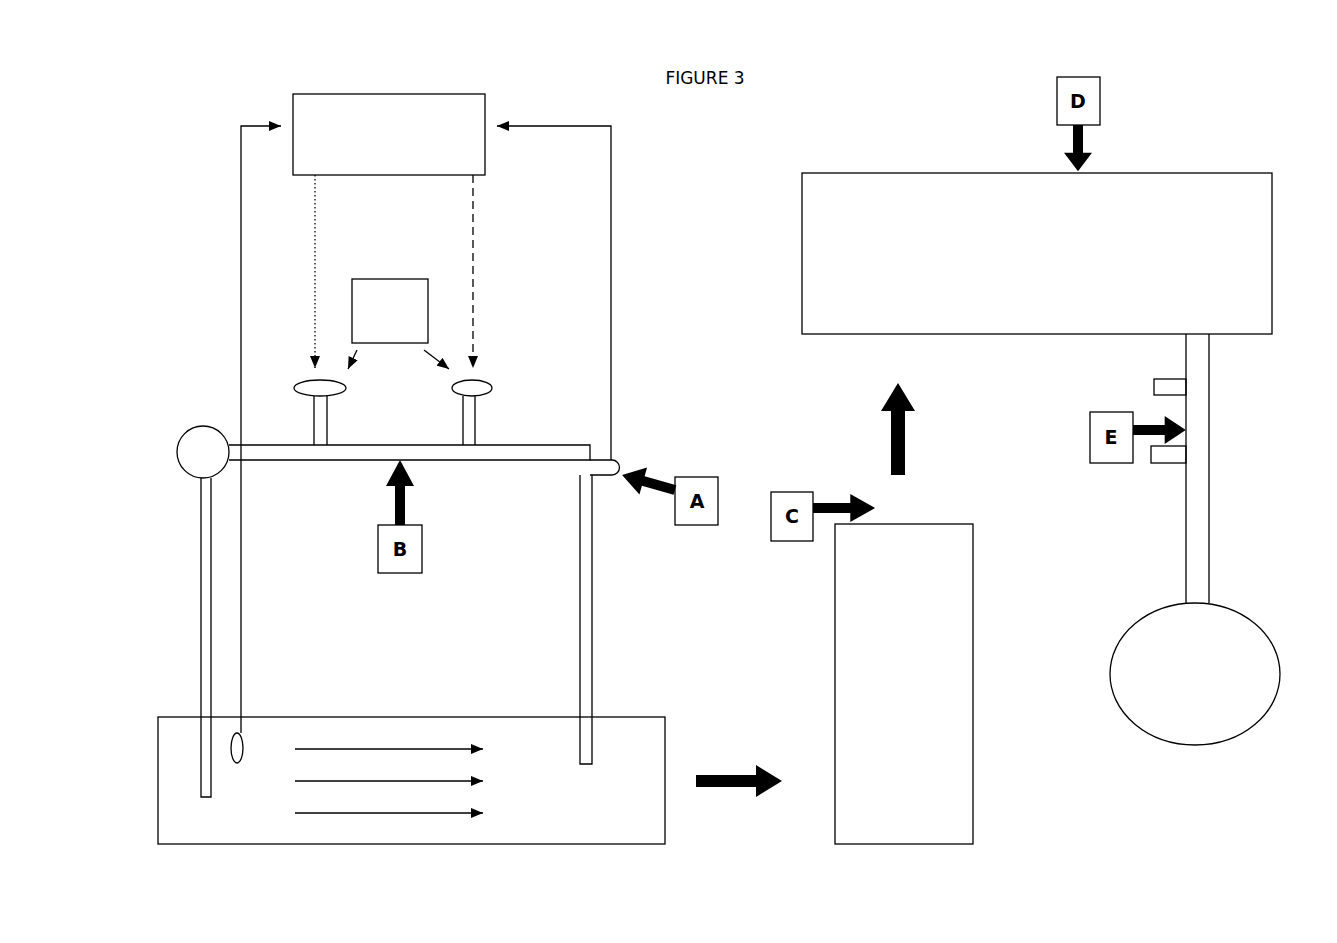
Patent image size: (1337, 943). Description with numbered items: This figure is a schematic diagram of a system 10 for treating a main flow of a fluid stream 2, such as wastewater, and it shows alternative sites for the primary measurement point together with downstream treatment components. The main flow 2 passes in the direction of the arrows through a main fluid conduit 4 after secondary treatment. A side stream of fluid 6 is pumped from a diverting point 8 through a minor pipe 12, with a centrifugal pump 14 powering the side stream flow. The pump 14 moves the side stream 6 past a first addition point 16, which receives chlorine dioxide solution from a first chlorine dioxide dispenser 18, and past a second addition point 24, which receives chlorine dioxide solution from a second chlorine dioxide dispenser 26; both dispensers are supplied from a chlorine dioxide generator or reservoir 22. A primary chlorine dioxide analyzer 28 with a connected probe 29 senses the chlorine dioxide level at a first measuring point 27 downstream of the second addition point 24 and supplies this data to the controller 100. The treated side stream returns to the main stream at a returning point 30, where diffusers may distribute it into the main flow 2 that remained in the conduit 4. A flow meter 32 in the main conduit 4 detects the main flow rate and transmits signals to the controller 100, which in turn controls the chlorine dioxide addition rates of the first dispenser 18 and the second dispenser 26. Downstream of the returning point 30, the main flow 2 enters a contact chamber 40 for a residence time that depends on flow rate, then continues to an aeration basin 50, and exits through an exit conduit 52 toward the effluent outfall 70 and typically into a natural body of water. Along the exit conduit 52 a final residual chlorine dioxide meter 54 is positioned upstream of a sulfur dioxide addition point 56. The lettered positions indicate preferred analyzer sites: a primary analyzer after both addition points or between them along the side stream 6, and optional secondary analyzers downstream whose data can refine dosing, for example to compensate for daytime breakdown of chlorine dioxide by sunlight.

The main flow of a fluid stream 2 is at (390, 765).
The main fluid conduit 4 is at (388, 717).
The side stream of fluid 6 is at (200, 665).
The diverting point 8 is at (211, 797).
The system for treatment of a main flow of a fluid stream 10 is at (205, 257).
The minor pipe 12 is at (200, 573).
The centrifugal pump 14 is at (180, 460).
The first addition point 16 is at (327, 420).
The first chlorine dioxide dispenser 18 is at (290, 393).
The chlorine dioxide generator or reservoir 22 is at (390, 279).
The second addition point 24 is at (465, 432).
The second chlorine dioxide dispenser 26 is at (493, 382).
The first measuring point 27 is at (578, 474).
The primary chlorine dioxide analyzer 28 is at (623, 470).
The probe 29 is at (595, 466).
The returning point 30 is at (595, 739).
The flow meter 32 is at (243, 738).
The contact chamber 40 is at (977, 675).
The aeration basin 50 is at (1040, 175).
The exit conduit 52 is at (1209, 392).
The final residual chlorine dioxide meter 54 is at (1154, 382).
The sulfur dioxide addition point 56 is at (1167, 461).
The effluent outfall 70 is at (1194, 746).
The controller 100 is at (340, 110).